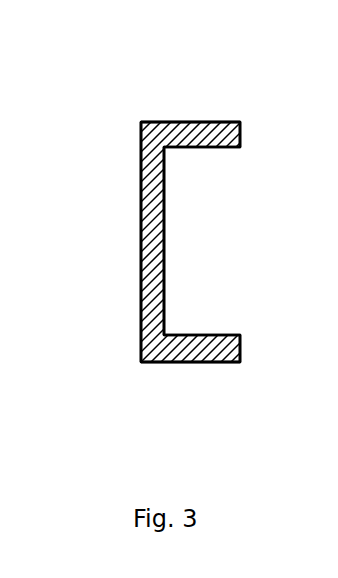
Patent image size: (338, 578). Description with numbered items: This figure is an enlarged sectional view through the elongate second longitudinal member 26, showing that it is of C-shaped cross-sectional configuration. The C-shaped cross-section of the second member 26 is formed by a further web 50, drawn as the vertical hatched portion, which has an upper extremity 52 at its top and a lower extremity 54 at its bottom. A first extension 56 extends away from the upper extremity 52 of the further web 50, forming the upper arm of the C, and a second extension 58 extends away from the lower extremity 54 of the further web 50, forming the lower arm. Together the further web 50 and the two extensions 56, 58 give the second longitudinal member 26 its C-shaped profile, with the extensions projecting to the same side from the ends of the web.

The second longitudinal member 26 is at (165, 193).
The further web 50 is at (143, 235).
The upper extremity 52 is at (141, 135).
The lower extremity 54 is at (153, 347).
The first extension 56 is at (210, 122).
The second extension 58 is at (205, 355).